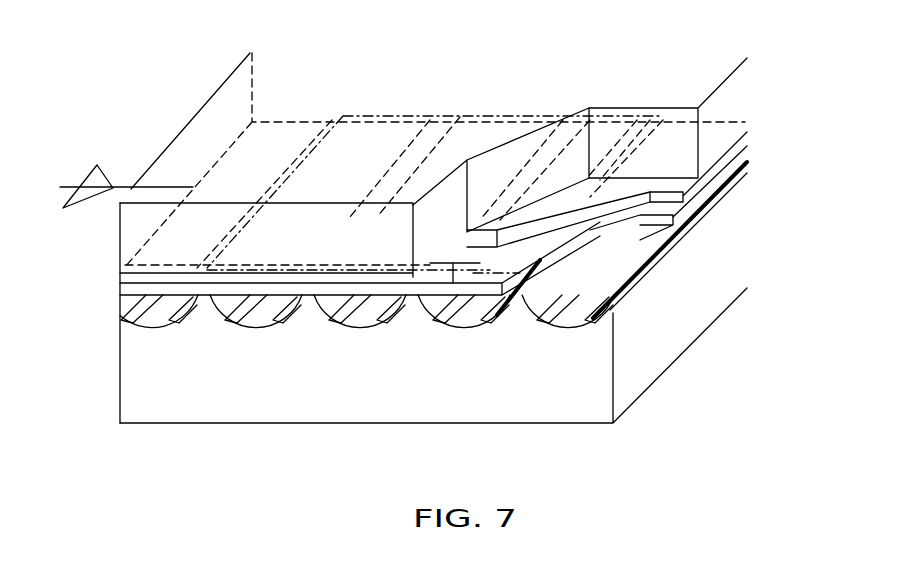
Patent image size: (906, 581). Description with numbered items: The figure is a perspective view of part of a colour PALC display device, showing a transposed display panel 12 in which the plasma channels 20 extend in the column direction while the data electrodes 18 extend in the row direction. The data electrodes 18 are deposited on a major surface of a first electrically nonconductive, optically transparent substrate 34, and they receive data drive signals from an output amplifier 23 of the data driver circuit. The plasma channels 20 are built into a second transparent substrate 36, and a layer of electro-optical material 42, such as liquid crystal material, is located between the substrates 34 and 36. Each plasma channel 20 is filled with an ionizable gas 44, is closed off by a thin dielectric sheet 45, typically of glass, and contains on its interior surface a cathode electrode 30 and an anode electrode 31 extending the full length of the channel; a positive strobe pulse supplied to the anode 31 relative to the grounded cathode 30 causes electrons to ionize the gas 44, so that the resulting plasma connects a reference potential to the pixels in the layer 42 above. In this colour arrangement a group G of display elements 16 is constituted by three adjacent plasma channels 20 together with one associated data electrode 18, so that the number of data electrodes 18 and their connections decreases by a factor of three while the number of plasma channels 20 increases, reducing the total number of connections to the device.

The display panel 12 is at (174, 110).
The first substrate 34 is at (232, 88).
The data electrode 18 is at (300, 132).
The output amplifier 23 is at (98, 163).
The display element 16 is at (560, 147).
The group of pixels G is at (635, 112).
The electro-optical material layer 42 is at (677, 185).
The dielectric sheet 45 is at (668, 207).
The second substrate 36 is at (653, 387).
The ionizable gas 44 is at (383, 322).
The anode electrode 31 is at (280, 318).
The cathode electrode 30 is at (225, 318).
The plasma channel 20 is at (158, 318).